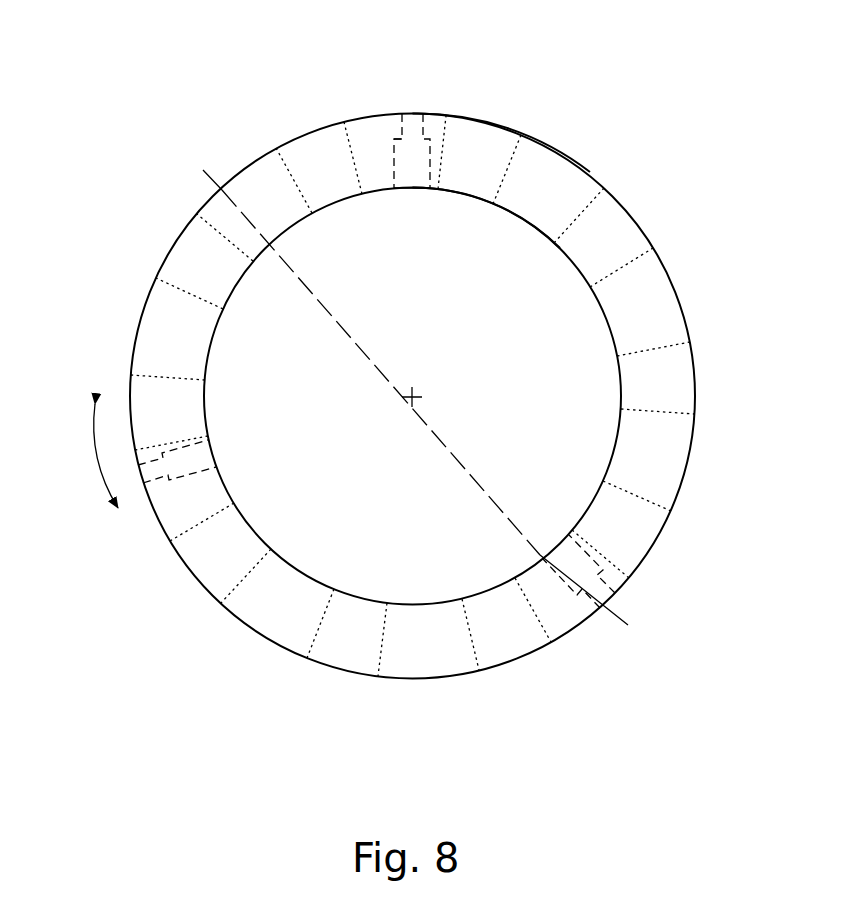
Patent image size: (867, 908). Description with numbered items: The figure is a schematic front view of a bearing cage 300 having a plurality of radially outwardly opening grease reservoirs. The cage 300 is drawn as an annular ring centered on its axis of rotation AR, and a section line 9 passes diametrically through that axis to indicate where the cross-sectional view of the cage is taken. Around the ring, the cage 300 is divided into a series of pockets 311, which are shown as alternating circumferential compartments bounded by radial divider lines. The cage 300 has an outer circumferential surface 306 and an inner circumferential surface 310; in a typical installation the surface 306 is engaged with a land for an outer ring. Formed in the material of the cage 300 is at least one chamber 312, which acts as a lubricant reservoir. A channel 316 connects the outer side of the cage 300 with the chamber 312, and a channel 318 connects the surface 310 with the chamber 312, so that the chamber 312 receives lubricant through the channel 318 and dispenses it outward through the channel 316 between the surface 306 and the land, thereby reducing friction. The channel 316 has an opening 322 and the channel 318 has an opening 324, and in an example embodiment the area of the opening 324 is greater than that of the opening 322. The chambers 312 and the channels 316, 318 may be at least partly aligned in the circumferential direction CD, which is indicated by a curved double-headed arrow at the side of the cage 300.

The bearing cage 300 is at (718, 110).
The circumferential surface 306 is at (590, 173).
The circumferential surface 310 is at (608, 480).
The pockets 311 is at (226, 273).
The chamber 312 is at (412, 153).
The channel 316 is at (421, 118).
The channel 318 is at (407, 172).
The opening 322 is at (413, 112).
The opening 324 is at (410, 188).
The section line 9- 9 is at (203, 170).
The axis of rotation AR is at (420, 393).
The circumferential direction CD is at (97, 453).